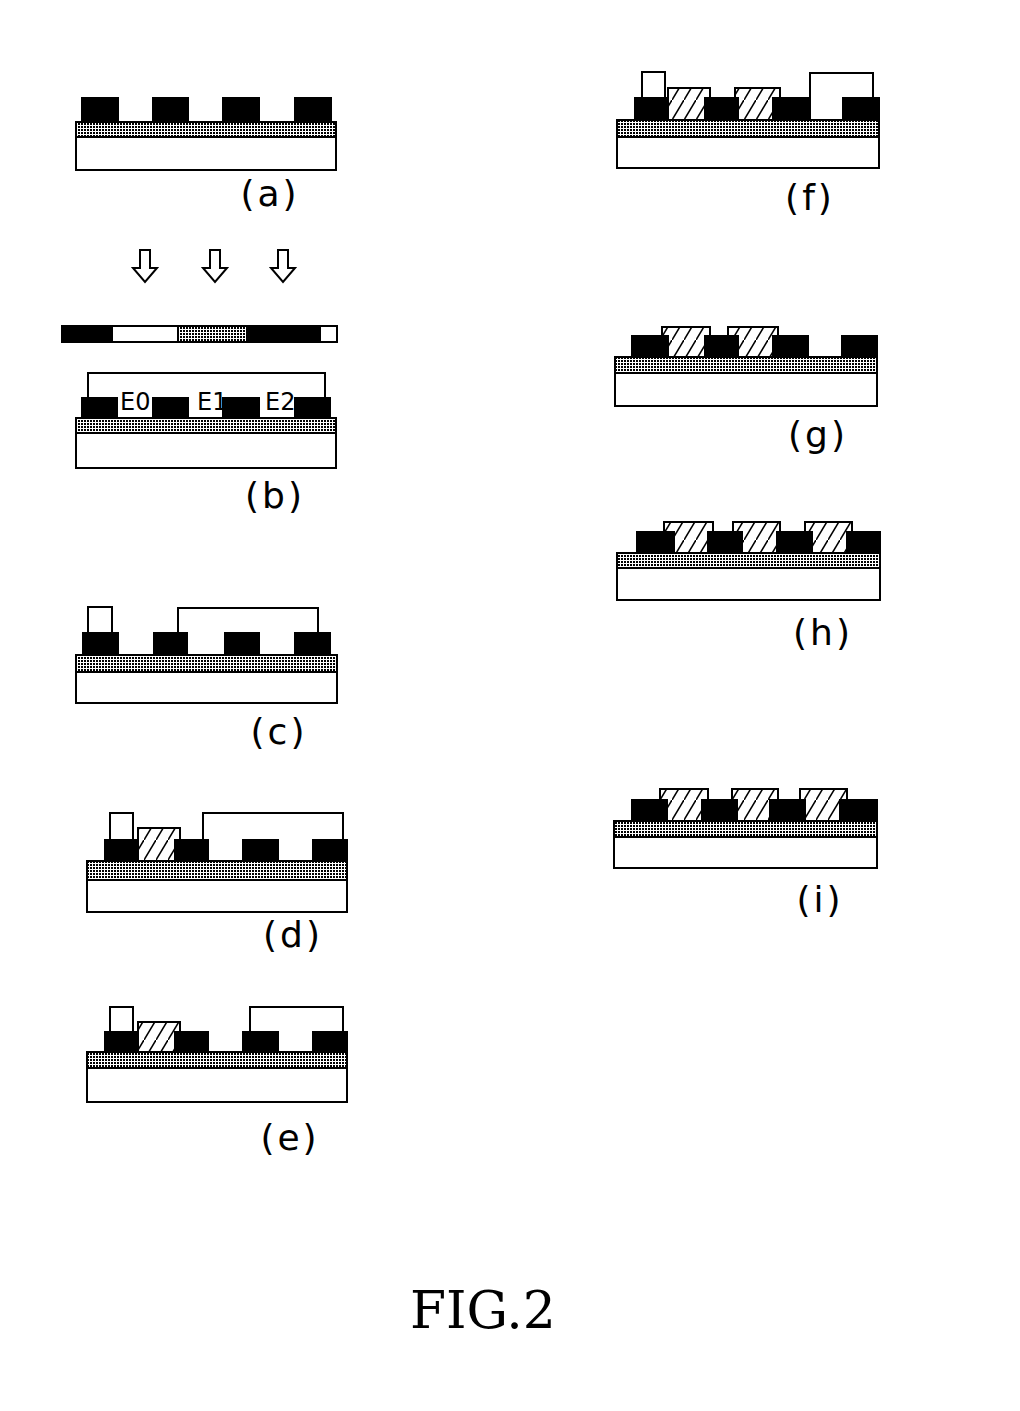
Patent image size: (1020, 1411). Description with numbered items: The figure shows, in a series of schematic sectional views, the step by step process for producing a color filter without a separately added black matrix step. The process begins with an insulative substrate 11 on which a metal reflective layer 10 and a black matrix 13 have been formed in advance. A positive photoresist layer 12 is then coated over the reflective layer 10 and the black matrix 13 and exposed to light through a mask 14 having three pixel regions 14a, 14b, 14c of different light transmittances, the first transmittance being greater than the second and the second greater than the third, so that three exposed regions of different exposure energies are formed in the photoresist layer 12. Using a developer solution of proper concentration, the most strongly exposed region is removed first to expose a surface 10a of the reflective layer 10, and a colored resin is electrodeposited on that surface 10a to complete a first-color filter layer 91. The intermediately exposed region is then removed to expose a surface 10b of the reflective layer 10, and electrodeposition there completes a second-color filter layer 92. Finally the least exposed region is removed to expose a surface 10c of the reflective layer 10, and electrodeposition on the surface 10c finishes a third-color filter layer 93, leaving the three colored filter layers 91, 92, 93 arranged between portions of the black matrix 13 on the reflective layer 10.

The metal reflective layer 10 is at (336, 128).
The insulative substrate 11 is at (336, 160).
The black matrix 13 is at (332, 103).
The positive photoresist layer 12 is at (325, 385).
The mask 14 is at (236, 316).
The pixel region 14a is at (127, 323).
The pixel region 14b is at (205, 323).
The pixel region 14c is at (273, 323).
The exposed surface of the reflective layer 10a is at (133, 653).
The exposed surface of the reflective layer 10b is at (222, 1050).
The exposed surface of the reflective layer 10c is at (823, 355).
The first-color filter layer 91 is at (165, 828).
The second-color filter layer 92 is at (759, 88).
The third-color filter layer 93 is at (828, 522).